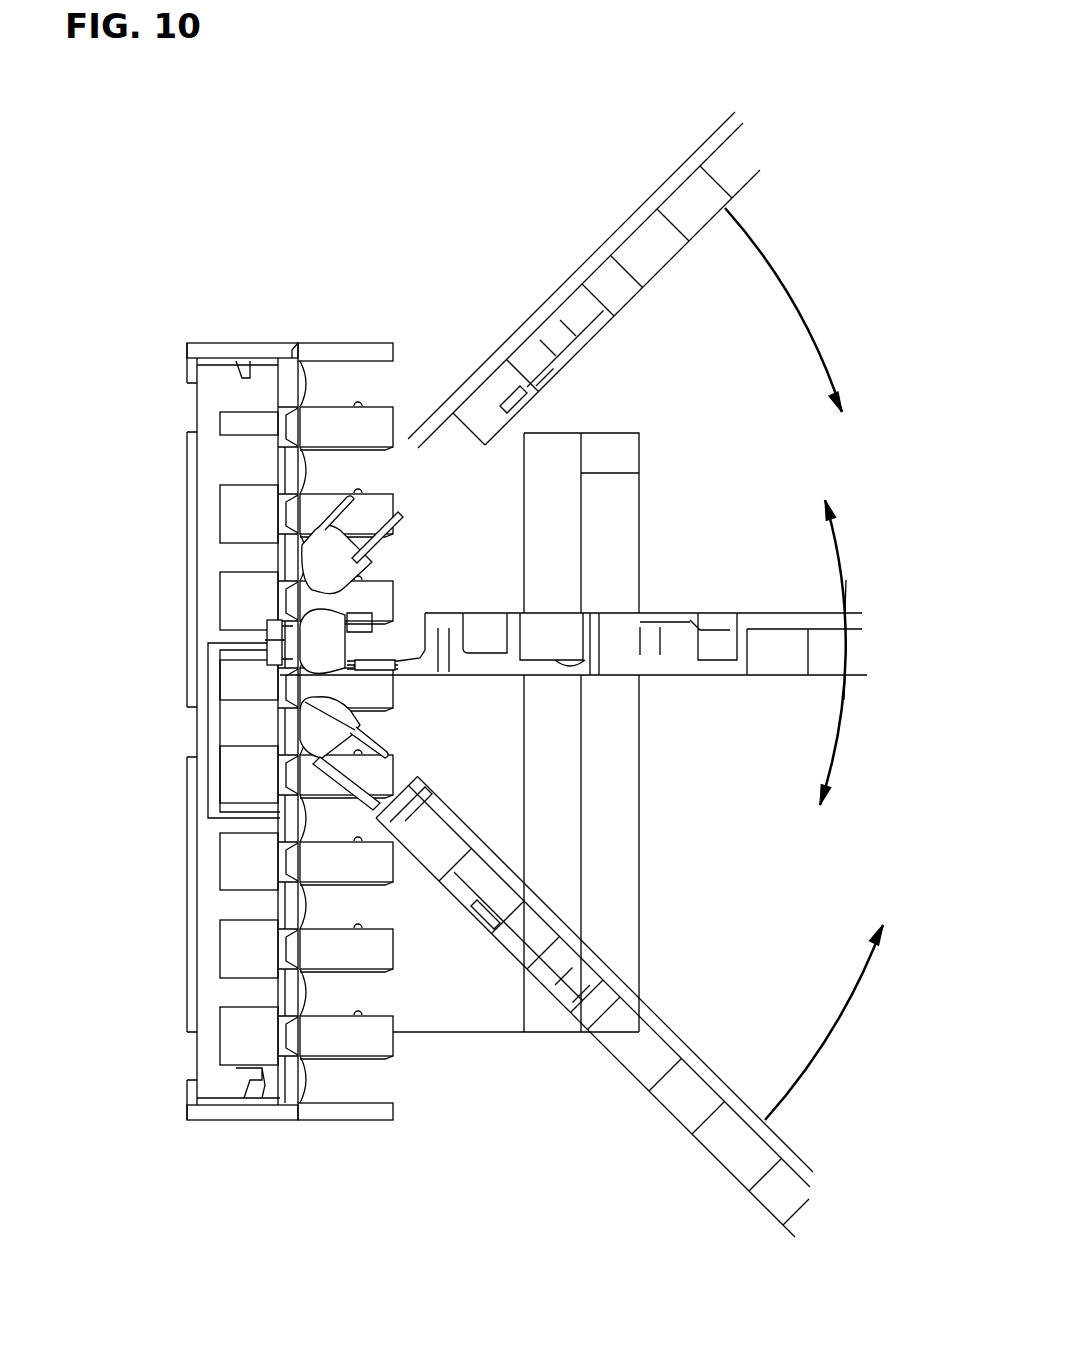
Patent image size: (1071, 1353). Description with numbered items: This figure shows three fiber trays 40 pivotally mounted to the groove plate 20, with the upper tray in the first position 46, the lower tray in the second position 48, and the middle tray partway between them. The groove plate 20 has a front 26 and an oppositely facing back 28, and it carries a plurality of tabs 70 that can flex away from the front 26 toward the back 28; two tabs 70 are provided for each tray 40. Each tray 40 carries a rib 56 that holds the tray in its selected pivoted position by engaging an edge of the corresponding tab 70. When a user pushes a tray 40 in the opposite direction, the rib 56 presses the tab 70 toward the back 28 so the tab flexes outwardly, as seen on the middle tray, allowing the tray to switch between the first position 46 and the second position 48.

The groove plate 20 is at (230, 342).
The front 26 is at (403, 920).
The back 28 is at (136, 913).
The tray 40 is at (613, 323).
The first position 46 is at (678, 902).
The second position 48 is at (684, 302).
The rib 56 is at (307, 588).
The tab 70 is at (290, 562).